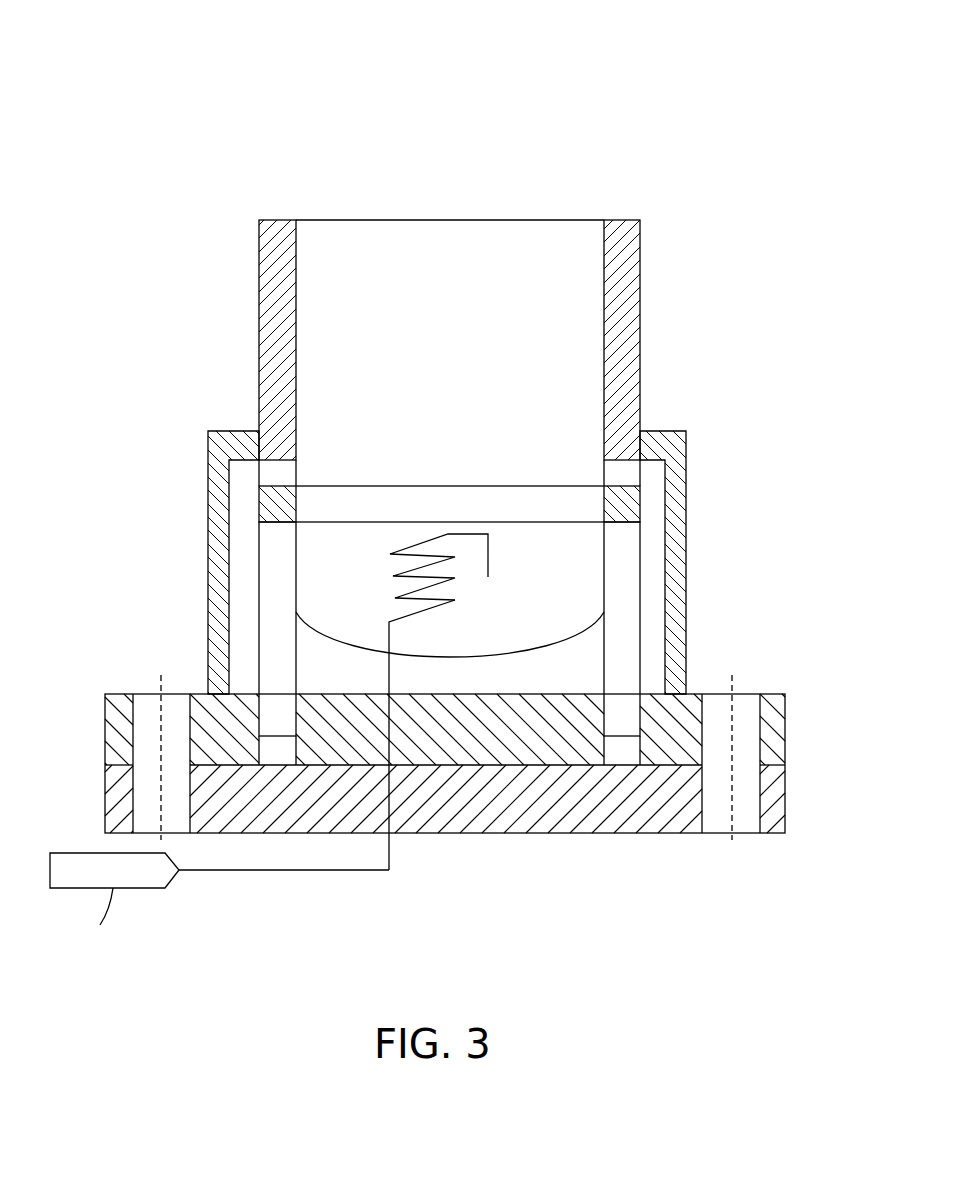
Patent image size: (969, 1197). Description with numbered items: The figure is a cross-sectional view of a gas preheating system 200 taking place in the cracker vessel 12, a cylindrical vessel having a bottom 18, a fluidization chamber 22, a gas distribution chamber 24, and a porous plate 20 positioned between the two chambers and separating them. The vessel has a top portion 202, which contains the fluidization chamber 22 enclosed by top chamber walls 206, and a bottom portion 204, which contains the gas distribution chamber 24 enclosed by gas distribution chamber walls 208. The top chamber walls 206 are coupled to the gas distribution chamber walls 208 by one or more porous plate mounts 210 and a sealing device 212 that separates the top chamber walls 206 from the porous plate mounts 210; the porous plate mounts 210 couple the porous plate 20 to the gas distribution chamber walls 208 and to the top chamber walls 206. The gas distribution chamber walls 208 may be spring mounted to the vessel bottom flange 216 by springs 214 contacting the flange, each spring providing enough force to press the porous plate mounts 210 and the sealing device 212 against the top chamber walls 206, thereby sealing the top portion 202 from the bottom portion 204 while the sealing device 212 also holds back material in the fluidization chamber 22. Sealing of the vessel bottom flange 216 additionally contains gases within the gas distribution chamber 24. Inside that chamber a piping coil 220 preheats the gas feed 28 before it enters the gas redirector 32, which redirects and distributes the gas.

The gas preheating system 200 is at (244, 95).
The cracker vessel 12 is at (233, 259).
The top portion 202 is at (640, 255).
The top chamber walls 206 is at (640, 385).
The fluidization chamber 22 is at (583, 294).
The porous plate 20 is at (488, 484).
The porous plate mounts 210 is at (259, 509).
The sealing device 212 is at (642, 473).
The bottom portion 204 is at (208, 652).
The gas distribution chamber walls 208 is at (642, 608).
The gas distribution chamber 24 is at (305, 577).
The bottom 18 is at (530, 650).
The gas redirector 32 is at (490, 565).
The piping coil 220 is at (432, 610).
The springs 214 is at (642, 752).
The vessel bottom flange 216 is at (768, 834).
The gas feed 28 is at (252, 871).